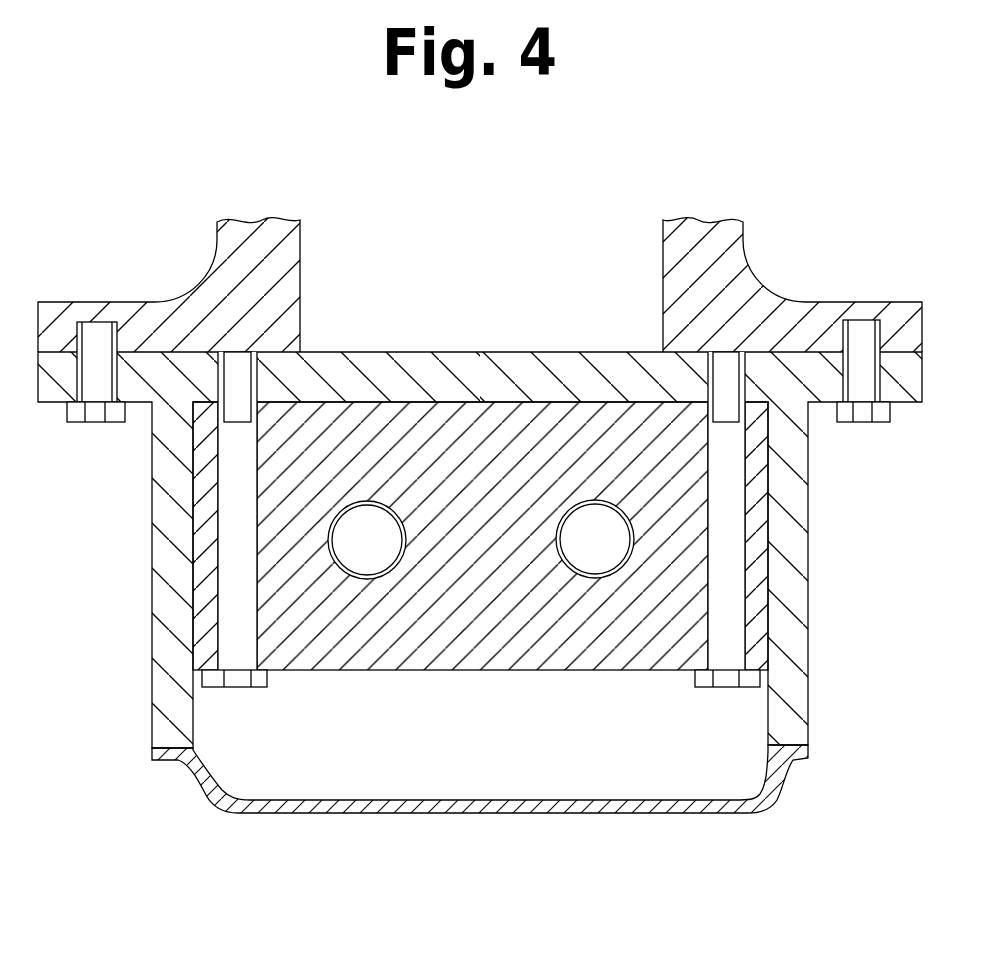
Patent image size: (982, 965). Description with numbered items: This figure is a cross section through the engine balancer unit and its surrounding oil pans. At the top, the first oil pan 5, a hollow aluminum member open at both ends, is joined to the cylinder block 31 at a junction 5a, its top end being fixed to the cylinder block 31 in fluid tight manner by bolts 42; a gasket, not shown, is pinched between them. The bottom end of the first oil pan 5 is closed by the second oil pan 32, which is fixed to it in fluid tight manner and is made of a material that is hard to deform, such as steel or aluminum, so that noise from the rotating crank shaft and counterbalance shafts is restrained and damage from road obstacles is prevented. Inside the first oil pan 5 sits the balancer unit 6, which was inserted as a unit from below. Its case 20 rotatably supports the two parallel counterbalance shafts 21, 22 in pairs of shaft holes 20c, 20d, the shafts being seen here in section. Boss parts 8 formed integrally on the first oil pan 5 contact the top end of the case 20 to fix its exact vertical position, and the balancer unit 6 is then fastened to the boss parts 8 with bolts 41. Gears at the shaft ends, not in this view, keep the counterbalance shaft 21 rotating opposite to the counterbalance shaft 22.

The first oil pan 5 is at (793, 652).
The junction 5a is at (150, 350).
The balancer unit 6 is at (460, 450).
The boss parts 8 is at (283, 388).
The case 20 is at (758, 542).
The shaft holes 20c is at (370, 575).
The shaft holes 20d is at (602, 573).
The counterbalance shaft 21 is at (348, 547).
The counterbalance shaft 22 is at (613, 547).
The cylinder block 31 is at (287, 245).
The second oil pan 32 is at (728, 807).
The bolts 41 is at (236, 662).
The bolts 42 is at (97, 413).